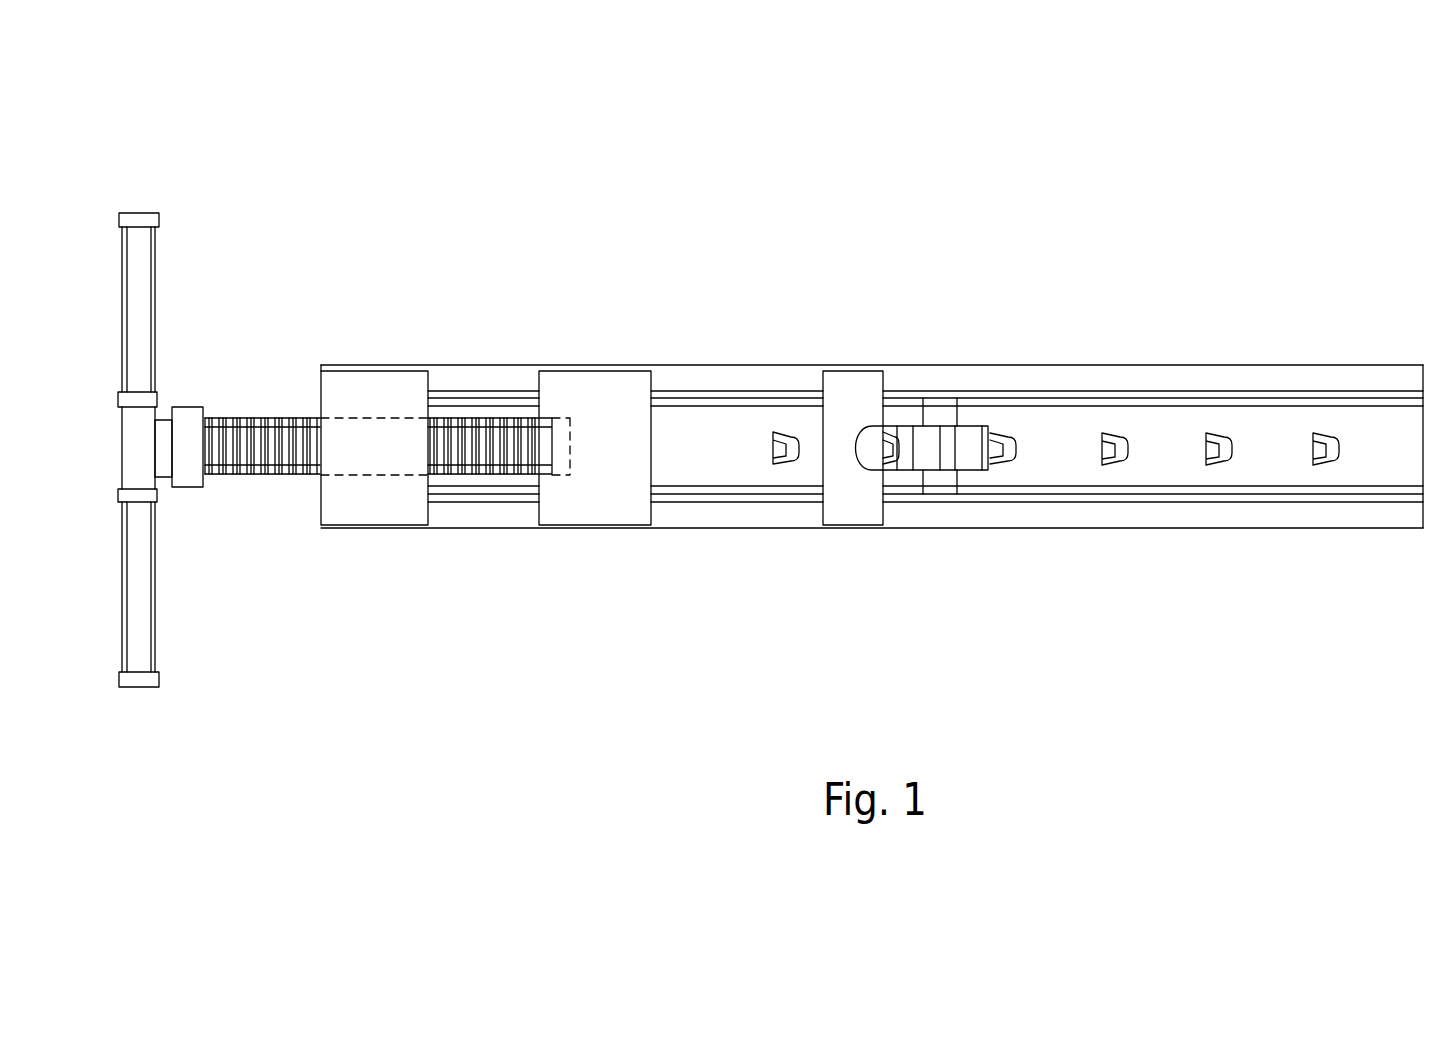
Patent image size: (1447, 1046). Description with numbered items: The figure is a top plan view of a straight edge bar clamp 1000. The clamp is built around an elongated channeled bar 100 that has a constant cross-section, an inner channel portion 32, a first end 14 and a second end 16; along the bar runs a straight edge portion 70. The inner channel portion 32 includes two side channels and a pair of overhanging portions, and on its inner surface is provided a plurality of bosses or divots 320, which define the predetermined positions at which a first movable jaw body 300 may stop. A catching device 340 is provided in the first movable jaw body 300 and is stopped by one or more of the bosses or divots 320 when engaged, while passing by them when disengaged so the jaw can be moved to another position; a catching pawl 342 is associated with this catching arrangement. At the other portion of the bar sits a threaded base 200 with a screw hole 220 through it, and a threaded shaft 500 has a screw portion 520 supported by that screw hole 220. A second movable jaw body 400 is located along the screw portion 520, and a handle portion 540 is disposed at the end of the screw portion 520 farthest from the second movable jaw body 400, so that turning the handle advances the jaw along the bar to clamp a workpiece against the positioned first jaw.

The straight edge bar clamp 1000 is at (952, 158).
The elongated channeled bar 100 is at (478, 378).
The first end 14 is at (322, 371).
The second end 16 is at (1423, 365).
The straight edge portion 70 is at (745, 368).
The inner channel portion 32 is at (1375, 453).
The threaded base 200 is at (412, 507).
The screw hole 220 is at (355, 458).
The first movable jaw body 300 is at (847, 497).
The bosses or divots 320 is at (777, 432).
The catching device 340 is at (925, 462).
The catching pawl 342 is at (985, 470).
The second movable jaw body 400 is at (608, 395).
The threaded shaft 500 is at (222, 474).
The screw portion 520 is at (268, 474).
The handle portion 540 is at (155, 392).